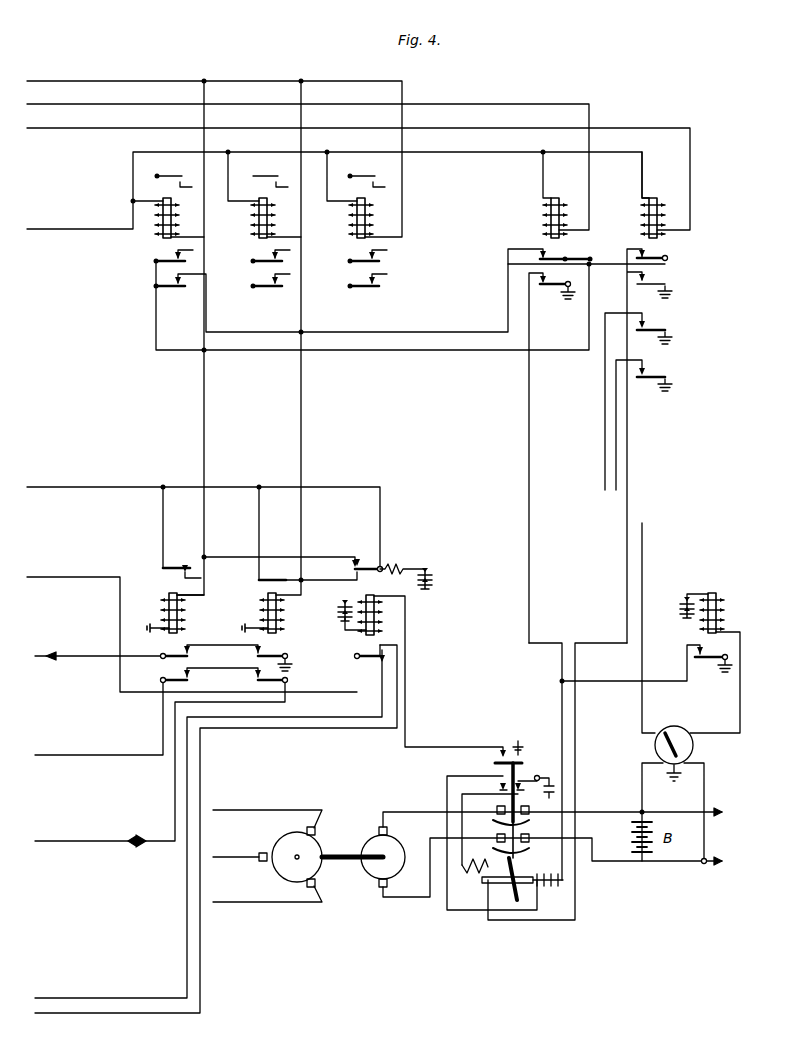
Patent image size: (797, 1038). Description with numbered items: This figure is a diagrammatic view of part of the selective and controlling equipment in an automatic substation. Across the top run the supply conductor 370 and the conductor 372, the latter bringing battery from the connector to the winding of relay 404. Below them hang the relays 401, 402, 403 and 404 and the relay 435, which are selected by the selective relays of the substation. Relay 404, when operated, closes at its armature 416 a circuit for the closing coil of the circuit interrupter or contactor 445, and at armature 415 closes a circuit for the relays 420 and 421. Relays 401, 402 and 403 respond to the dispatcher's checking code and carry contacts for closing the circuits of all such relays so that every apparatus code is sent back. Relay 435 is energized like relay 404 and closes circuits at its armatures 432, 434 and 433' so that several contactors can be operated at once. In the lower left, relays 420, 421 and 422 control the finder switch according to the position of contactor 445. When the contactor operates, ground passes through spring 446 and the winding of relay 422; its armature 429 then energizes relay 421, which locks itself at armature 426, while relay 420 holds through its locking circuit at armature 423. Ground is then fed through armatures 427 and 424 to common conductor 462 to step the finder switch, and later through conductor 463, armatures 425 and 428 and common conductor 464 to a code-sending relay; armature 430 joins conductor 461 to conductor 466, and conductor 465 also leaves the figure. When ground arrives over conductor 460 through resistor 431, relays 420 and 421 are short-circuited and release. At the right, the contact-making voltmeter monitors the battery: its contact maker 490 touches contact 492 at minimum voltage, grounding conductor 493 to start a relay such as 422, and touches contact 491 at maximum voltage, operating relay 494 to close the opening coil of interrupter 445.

The conductor 370 is at (45, 81).
The conductor 372 is at (50, 229).
The relay 401 is at (170, 222).
The relay 402 is at (266, 222).
The relay 403 is at (364, 222).
The relay 404 is at (551, 221).
The relay 435 is at (649, 220).
The armature 415 is at (555, 262).
The armature 416 is at (557, 276).
The armature 432 is at (668, 258).
The armature 434 is at (667, 330).
The armature 433' is at (672, 425).
The conductor 460 is at (78, 488).
The conductor 461 is at (70, 578).
The common conductor 462 is at (60, 657).
The conductor 463 is at (72, 756).
The common conductor 464 is at (68, 842).
The conductor 465 is at (68, 999).
The conductor 466 is at (92, 1012).
The armature 423 is at (182, 532).
The armature 426 is at (302, 541).
The armature 429 is at (303, 574).
The resistor 431 is at (408, 566).
The relay 420 is at (178, 618).
The relay 421 is at (277, 618).
The relay 422 is at (375, 618).
The armature 424 is at (200, 648).
The armature 425 is at (200, 673).
The armature 427 is at (275, 655).
The armature 428 is at (288, 681).
The armature 430 is at (362, 649).
The spring 446 is at (498, 767).
The contactor 445 is at (508, 868).
The conductor 493 is at (642, 548).
The relay 494 is at (720, 613).
The contact maker 490 is at (690, 757).
The contact 491 is at (683, 727).
The contact 492 is at (655, 742).